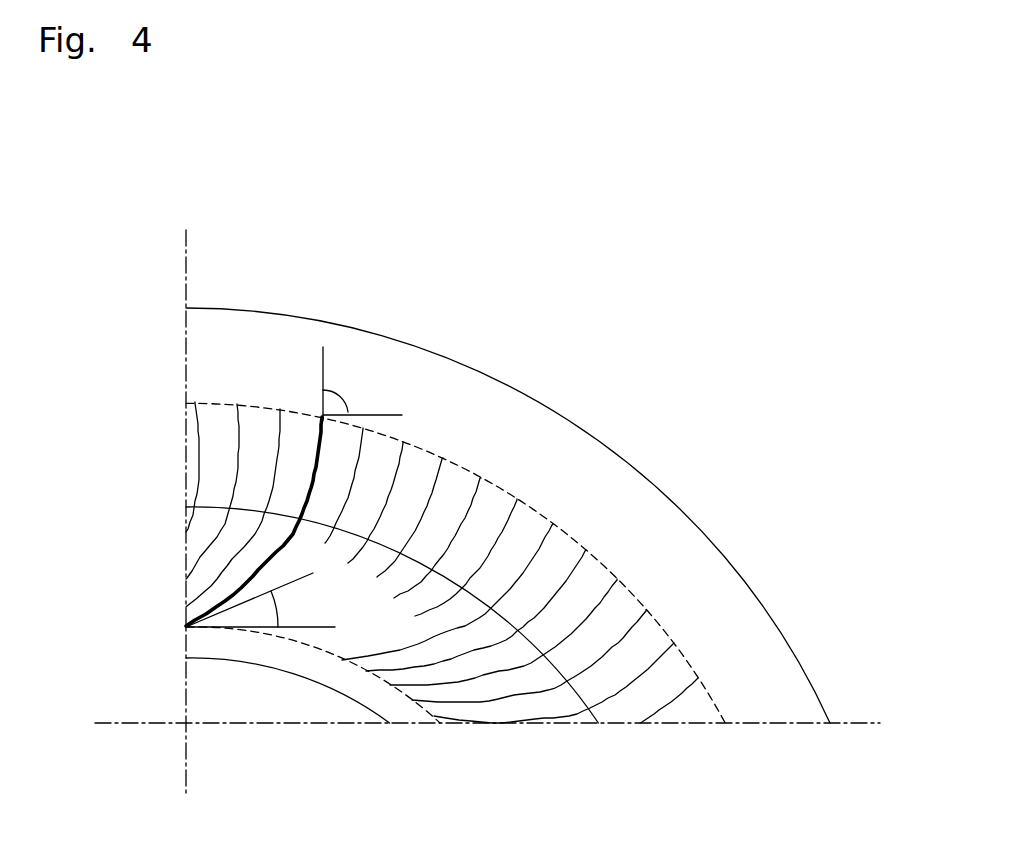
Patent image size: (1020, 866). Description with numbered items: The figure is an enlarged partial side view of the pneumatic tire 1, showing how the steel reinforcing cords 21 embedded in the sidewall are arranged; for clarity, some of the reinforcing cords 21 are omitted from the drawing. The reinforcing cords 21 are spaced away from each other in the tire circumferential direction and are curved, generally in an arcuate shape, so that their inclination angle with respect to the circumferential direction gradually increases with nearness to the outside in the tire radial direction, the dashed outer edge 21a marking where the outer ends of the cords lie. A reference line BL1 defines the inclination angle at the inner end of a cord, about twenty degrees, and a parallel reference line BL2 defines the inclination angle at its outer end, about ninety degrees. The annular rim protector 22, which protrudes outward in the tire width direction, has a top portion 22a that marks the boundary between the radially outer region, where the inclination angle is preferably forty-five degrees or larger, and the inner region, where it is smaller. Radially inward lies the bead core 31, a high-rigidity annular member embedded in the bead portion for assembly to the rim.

The pneumatic tire 1 is at (503, 313).
The reinforcing cords 21 is at (508, 493).
The blade outer peripheral edge 21a is at (556, 522).
The rim protector 22 is at (427, 671).
The top portion 22a is at (597, 723).
The bead core 31 is at (327, 675).
The reference line BL1 is at (285, 630).
The reference line BL2 is at (390, 415).